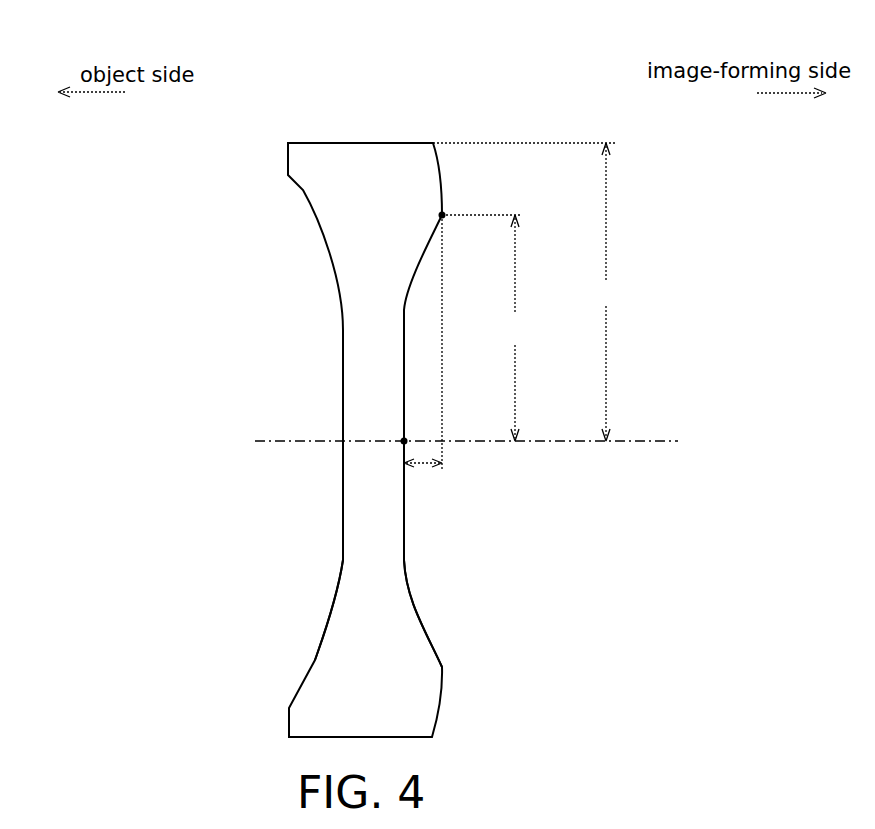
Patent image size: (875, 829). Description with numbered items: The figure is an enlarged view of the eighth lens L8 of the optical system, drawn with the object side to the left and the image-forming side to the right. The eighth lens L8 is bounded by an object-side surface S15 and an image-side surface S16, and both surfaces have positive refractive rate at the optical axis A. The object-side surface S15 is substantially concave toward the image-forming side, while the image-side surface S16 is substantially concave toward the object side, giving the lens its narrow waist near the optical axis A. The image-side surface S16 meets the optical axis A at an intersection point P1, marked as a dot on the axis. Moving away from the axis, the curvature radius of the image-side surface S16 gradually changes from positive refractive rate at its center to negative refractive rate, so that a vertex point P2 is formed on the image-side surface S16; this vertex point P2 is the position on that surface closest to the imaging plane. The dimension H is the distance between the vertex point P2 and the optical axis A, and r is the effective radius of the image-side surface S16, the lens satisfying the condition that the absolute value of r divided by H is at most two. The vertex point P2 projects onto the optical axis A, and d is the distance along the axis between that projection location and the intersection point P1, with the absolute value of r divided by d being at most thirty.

The eighth lens L8 is at (372, 165).
The object-side surface S15 is at (315, 660).
The image-side surface S16 is at (442, 667).
The optical axis A is at (662, 438).
The intersection point P1 is at (403, 440).
The vertex point P2 is at (445, 213).
The distance between vertex point and optical axis H is at (515, 328).
The effective radius of the image-side surface r is at (605, 292).
The distance between projection location and intersection point d is at (420, 466).